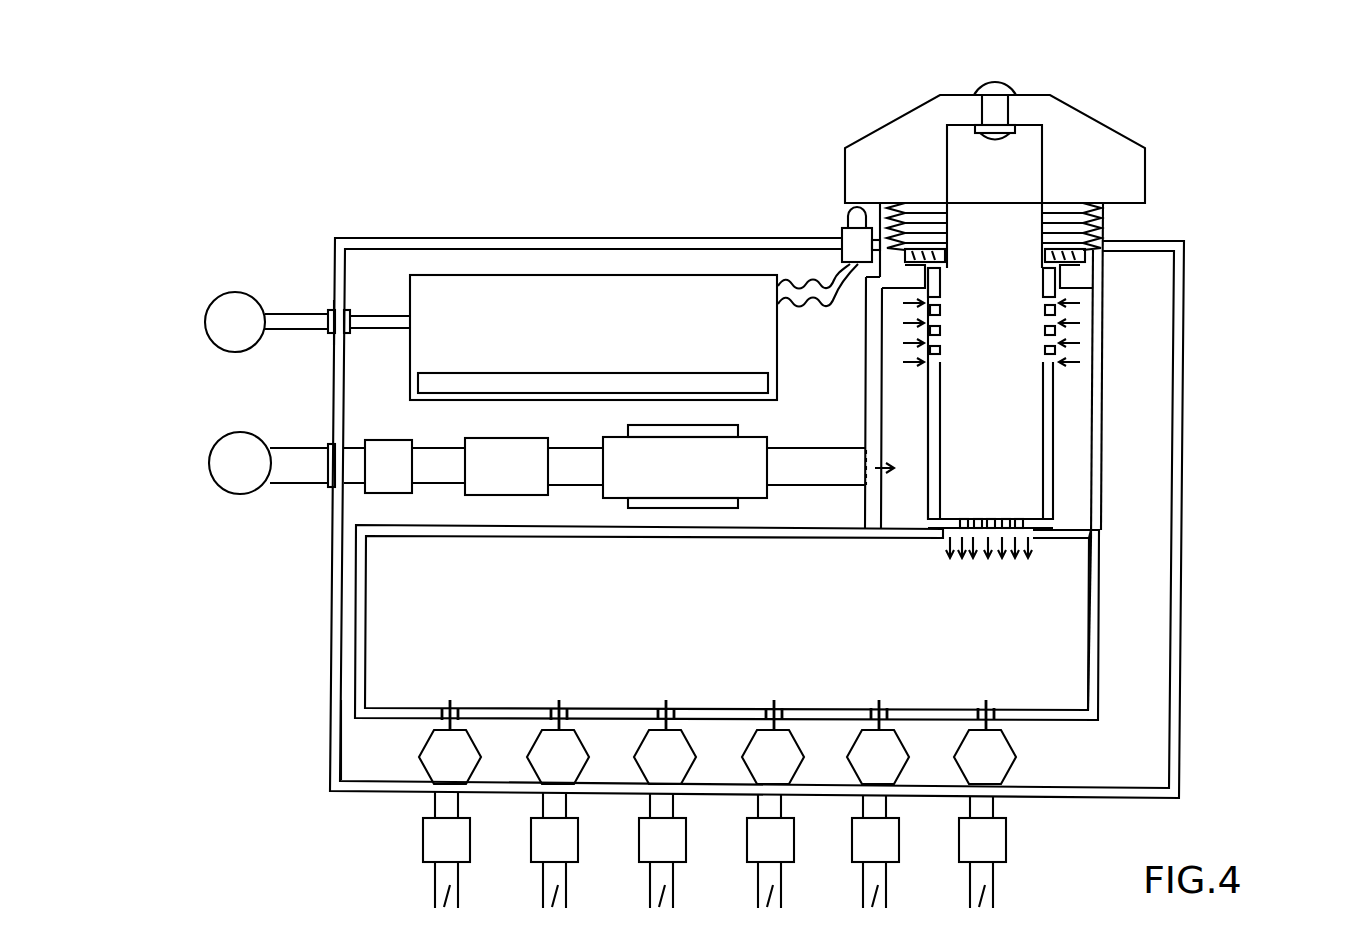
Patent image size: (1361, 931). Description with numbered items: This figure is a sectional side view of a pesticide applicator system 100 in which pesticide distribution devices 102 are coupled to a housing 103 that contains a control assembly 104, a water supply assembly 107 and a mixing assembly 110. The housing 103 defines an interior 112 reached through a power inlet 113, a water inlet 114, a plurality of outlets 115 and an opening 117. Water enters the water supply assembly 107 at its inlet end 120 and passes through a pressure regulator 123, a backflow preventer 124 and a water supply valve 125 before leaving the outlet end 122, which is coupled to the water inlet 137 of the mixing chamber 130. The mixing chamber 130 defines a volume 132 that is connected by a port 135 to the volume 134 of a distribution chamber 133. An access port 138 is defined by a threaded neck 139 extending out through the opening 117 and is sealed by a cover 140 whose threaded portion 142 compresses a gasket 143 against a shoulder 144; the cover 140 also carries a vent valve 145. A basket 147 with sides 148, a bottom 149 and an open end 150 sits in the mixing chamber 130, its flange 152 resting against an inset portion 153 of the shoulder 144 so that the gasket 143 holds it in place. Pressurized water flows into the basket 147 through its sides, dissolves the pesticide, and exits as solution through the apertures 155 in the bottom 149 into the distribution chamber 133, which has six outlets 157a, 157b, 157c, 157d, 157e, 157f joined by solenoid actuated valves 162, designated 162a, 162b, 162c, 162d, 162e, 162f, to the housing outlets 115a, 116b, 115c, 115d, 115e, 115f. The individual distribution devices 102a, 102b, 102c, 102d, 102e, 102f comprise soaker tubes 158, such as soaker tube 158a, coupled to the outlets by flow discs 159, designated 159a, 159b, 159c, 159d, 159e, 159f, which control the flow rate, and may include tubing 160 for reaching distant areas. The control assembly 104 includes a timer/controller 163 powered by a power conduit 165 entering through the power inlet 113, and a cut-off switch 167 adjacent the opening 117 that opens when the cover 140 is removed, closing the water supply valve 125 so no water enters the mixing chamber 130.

The pesticide applicator system 100 is at (216, 610).
The pesticide distribution devices 102 is at (418, 862).
The distribution device 102a is at (460, 868).
The distribution device 102b is at (568, 868).
The distribution device 102c is at (675, 868).
The distribution device 102d is at (783, 868).
The distribution device 102e is at (888, 868).
The distribution device 102f is at (995, 868).
The housing 103 is at (333, 700).
The control assembly 104 is at (505, 272).
The water supply assembly 107 is at (460, 498).
The mixing assembly 110 is at (1110, 432).
The interior 112 is at (385, 372).
The power inlet 113 is at (334, 305).
The water inlet 114 is at (333, 447).
The outlets 115 is at (437, 794).
The outlet 115a is at (460, 797).
The outlet connection 116b is at (566, 797).
The outlet 115c is at (676, 798).
The outlet 115d is at (784, 799).
The outlet 115e is at (889, 800).
The outlet 115f is at (996, 801).
The opening 117 is at (878, 200).
The inlet end 120 is at (356, 450).
The outlet end 122 is at (816, 448).
The pressure regulator 123 is at (392, 446).
The backflow preventer 124 is at (516, 457).
The water supply valve 125 is at (658, 468).
The mixing chamber 130 is at (866, 381).
The volume 132 is at (906, 400).
The distribution chamber 133 is at (1096, 621).
The volume 134 is at (1053, 665).
The port 135 is at (950, 540).
The water inlet 137 is at (880, 462).
The access port 138 is at (1082, 258).
The threaded neck 139 is at (880, 207).
The cover 140 is at (905, 135).
The threaded portion 142 is at (1118, 203).
The gasket 143 is at (866, 280).
The shoulder 144 is at (1107, 262).
The vent valve 145 is at (1012, 78).
The basket 147 is at (1054, 468).
The sides 148 is at (1094, 493).
The bottom 149 is at (1084, 525).
The open end 150 is at (1045, 266).
The flange 152 is at (950, 272).
The inset portion 153 is at (1058, 278).
The apertures 155 is at (986, 517).
The outlet 157a is at (448, 702).
The outlet 157b is at (557, 702).
The outlet 157c is at (665, 702).
The outlet 157d is at (772, 702).
The outlet 157e is at (877, 702).
The outlet 157f is at (984, 702).
The soaker tubes 158 is at (435, 888).
The soaker tube 158a is at (460, 888).
The flow discs 159 is at (1009, 840).
The flow disc 159a is at (422, 841).
The flow disc 159b is at (531, 842).
The flow disc 159c is at (639, 842).
The flow disc 159d is at (747, 842).
The flow disc 159e is at (852, 842).
The flow disc 159f is at (959, 842).
The tubing 160 is at (568, 888).
The solenoid actuated valves 162 is at (473, 740).
The valve 162a is at (424, 753).
The valve 162b is at (528, 762).
The valve 162c is at (636, 762).
The valve 162d is at (744, 762).
The valve 162e is at (849, 762).
The valve 162f is at (956, 762).
The timer/controller 163 is at (645, 313).
The power conduit 165 is at (372, 312).
The cut-off switch 167 is at (840, 238).